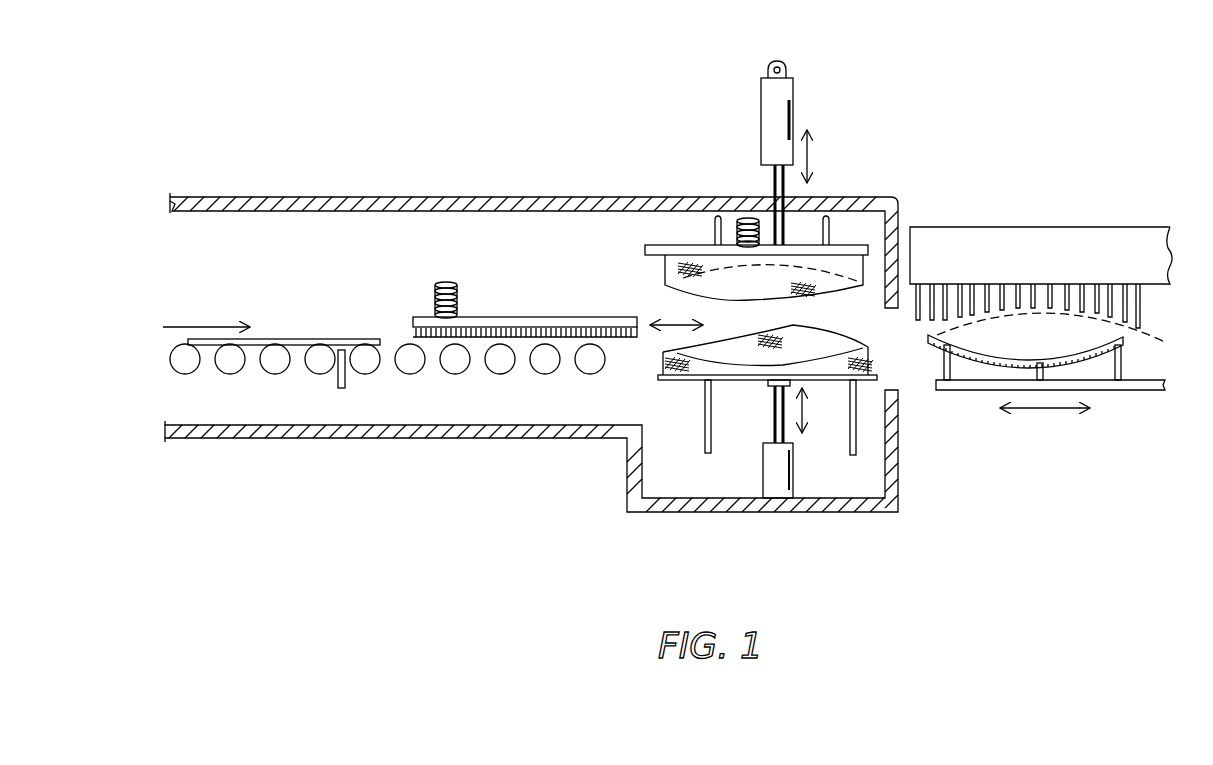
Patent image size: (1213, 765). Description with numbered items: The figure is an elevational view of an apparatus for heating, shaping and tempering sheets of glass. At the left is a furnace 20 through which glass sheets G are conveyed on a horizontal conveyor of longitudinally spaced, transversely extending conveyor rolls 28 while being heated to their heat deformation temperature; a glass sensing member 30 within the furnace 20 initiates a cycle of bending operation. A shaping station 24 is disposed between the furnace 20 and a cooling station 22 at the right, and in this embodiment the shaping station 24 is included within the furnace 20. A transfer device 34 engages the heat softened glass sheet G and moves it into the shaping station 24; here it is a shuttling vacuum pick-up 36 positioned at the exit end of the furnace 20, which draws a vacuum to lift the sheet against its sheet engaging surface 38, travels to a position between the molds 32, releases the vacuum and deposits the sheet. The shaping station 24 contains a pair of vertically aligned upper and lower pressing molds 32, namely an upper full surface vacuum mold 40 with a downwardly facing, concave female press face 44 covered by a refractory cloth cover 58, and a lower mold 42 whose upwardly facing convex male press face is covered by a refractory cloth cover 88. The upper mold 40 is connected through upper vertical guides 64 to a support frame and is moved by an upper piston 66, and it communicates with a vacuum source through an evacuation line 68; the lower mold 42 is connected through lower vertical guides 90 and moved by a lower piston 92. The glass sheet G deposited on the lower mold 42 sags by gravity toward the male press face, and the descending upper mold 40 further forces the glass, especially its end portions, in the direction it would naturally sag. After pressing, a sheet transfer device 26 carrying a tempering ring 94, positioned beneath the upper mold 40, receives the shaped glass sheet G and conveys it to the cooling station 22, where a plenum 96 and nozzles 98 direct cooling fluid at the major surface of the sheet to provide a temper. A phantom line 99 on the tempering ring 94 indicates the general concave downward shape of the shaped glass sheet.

The furnace 20 is at (342, 154).
The cooling station 22 is at (1035, 167).
The shaping station 24 is at (856, 60).
The sheet transfer device 26 is at (1135, 392).
The conveyor rolls 28 is at (412, 378).
The glass sensing member 30 is at (338, 384).
The upper and lower pressing molds 32 is at (862, 297).
The transfer device 34 is at (585, 315).
The shuttling vacuum pick-up 36 is at (516, 317).
The sheet engaging surface 38 is at (515, 338).
The upper full surface vacuum mold 40 is at (862, 246).
The lower mold 42 is at (875, 363).
The female press face 44 is at (700, 296).
The refractory cloth cover 58 is at (812, 292).
The upper vertical guides 64 is at (716, 231).
The upper piston 66 is at (794, 93).
The evacuation line 68 is at (740, 223).
The refractory cloth cover 88 is at (762, 334).
The lower vertical guides 90 is at (704, 405).
The lower piston 92 is at (794, 466).
The tempering ring 94 is at (1125, 340).
The plenum 96 is at (1124, 227).
The nozzles 98 is at (1142, 298).
The phantom line 99 is at (1157, 336).
The glass sheet G is at (305, 339).